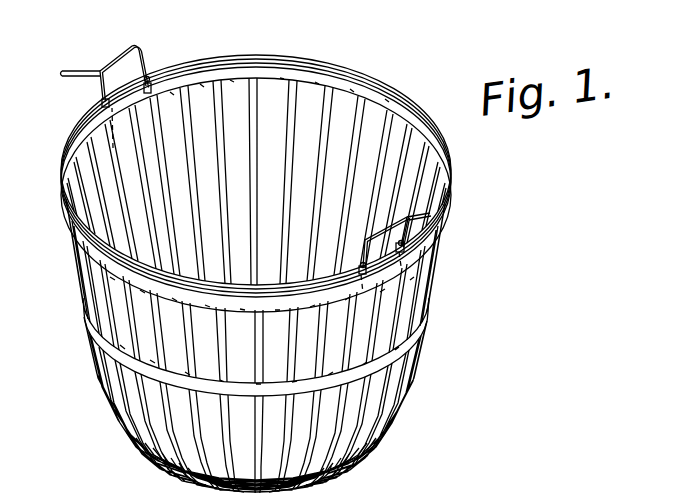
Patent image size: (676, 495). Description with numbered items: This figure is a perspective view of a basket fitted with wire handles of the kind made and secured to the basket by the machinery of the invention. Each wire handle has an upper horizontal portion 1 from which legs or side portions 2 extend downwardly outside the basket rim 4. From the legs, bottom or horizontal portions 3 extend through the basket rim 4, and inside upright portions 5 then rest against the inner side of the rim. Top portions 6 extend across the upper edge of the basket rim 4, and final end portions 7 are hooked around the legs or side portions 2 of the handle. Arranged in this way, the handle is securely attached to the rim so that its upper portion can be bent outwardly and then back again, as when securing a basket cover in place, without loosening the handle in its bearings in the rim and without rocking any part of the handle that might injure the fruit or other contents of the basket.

The upper horizontal portion 1 is at (113, 55).
The legs or side portions 2 is at (62, 73).
The bottom or horizontal portions 3 is at (474, 283).
The basket rim 4 is at (306, 70).
The inside upright portions 5 is at (112, 104).
The top portions 6 is at (146, 73).
The final end portions 7 is at (103, 100).